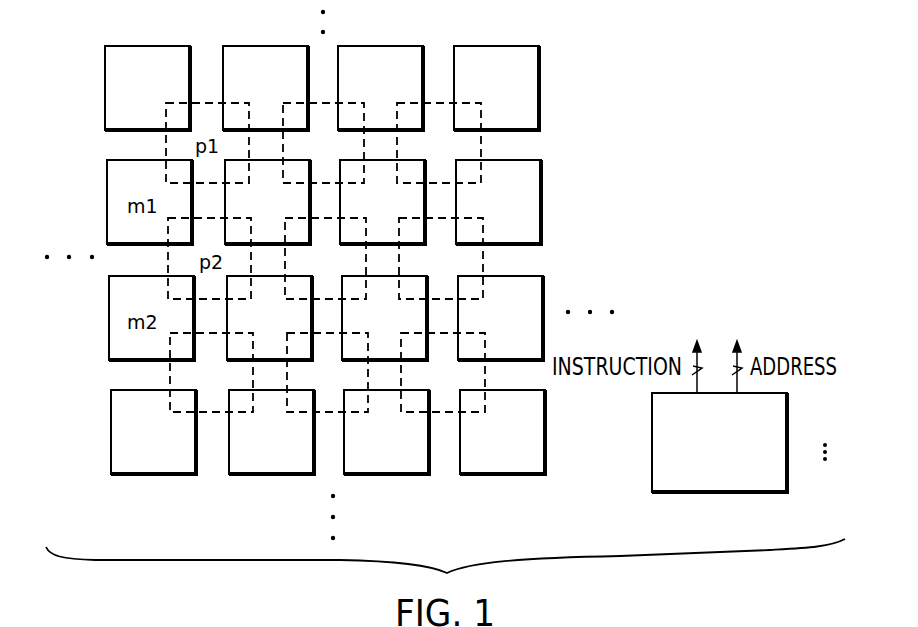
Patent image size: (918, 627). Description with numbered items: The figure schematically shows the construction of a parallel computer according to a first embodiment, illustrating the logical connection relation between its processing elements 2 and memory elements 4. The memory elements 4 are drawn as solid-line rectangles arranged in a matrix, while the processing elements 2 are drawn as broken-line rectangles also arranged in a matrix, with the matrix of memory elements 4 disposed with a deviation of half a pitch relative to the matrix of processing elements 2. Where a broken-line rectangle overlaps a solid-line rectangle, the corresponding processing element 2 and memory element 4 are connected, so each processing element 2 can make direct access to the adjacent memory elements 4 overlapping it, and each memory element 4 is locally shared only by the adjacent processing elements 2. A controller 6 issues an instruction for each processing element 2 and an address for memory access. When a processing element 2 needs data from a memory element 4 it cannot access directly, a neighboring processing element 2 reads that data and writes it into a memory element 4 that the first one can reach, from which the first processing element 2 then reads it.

The memory element 4 is at (482, 46).
The processing element 2 is at (482, 144).
The controller 6 is at (652, 413).